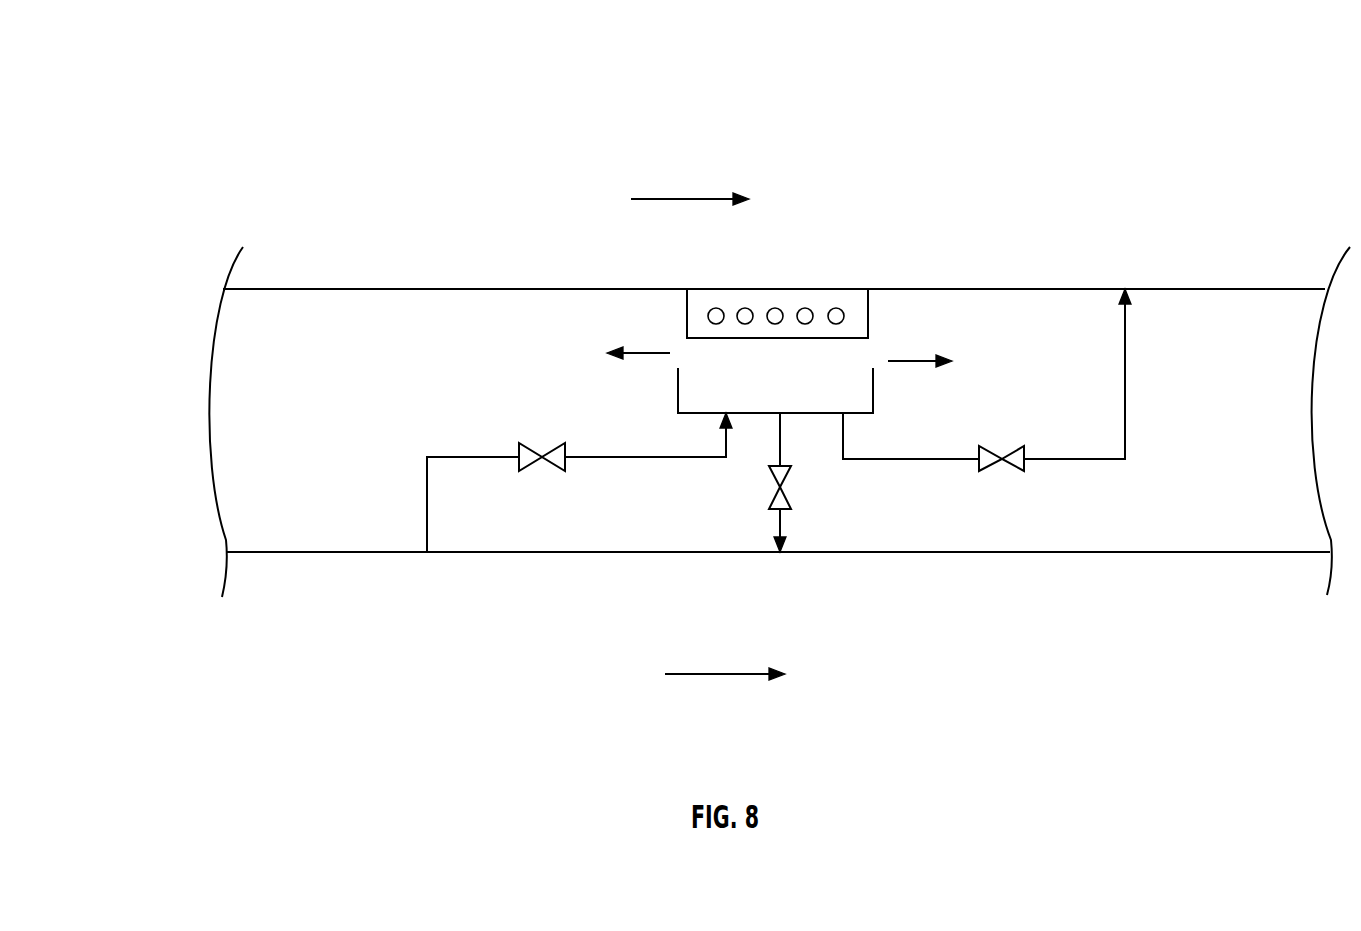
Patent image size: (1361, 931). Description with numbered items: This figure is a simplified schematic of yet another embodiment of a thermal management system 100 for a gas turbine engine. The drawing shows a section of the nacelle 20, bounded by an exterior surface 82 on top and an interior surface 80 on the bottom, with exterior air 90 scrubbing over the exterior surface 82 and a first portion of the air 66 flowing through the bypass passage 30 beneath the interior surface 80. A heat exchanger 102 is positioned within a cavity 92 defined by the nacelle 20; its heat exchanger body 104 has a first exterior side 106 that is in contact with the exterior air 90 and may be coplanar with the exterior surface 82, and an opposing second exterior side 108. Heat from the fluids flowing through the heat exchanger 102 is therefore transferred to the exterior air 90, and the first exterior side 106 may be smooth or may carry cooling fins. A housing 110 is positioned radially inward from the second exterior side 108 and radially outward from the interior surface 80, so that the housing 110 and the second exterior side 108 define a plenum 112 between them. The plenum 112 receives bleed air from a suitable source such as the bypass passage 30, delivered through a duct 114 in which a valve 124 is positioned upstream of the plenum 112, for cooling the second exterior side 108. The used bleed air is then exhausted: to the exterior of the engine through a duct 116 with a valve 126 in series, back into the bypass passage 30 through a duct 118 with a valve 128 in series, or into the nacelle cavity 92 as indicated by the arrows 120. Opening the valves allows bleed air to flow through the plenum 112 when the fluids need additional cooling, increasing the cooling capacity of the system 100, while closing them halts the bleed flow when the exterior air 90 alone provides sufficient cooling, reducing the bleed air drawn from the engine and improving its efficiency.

The thermal management system 100 is at (206, 106).
The nacelle 20 is at (495, 281).
The exterior surface of the nacelle 82 is at (354, 286).
The interior surface of the nacelle 80 is at (318, 554).
The exterior air 90 is at (693, 196).
The first portion of the air 66 is at (720, 676).
The heat exchanger 102 is at (842, 276).
The heat exchanger body 104 is at (869, 318).
The first exterior side 106 is at (757, 287).
The second exterior side 108 is at (782, 339).
The plenum 112 is at (775, 390).
The housing 110 is at (750, 414).
The nacelle cavity 92 is at (791, 378).
The bypass passage 30 is at (1031, 596).
The arrows indicating used bleed air 120 is at (640, 355).
The duct 114 is at (456, 455).
The valve 124 is at (540, 483).
The duct 116 is at (1128, 388).
The valve 126 is at (1010, 498).
The duct 118 is at (782, 518).
The valve 128 is at (758, 495).